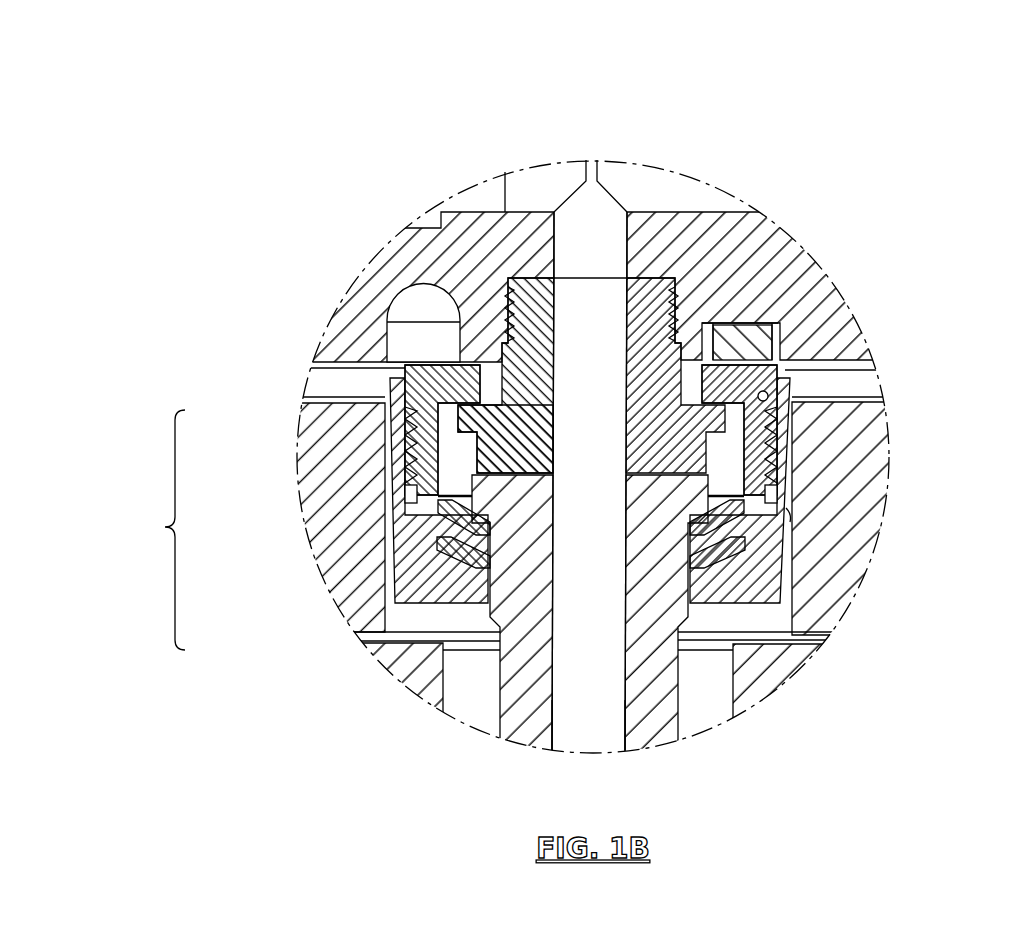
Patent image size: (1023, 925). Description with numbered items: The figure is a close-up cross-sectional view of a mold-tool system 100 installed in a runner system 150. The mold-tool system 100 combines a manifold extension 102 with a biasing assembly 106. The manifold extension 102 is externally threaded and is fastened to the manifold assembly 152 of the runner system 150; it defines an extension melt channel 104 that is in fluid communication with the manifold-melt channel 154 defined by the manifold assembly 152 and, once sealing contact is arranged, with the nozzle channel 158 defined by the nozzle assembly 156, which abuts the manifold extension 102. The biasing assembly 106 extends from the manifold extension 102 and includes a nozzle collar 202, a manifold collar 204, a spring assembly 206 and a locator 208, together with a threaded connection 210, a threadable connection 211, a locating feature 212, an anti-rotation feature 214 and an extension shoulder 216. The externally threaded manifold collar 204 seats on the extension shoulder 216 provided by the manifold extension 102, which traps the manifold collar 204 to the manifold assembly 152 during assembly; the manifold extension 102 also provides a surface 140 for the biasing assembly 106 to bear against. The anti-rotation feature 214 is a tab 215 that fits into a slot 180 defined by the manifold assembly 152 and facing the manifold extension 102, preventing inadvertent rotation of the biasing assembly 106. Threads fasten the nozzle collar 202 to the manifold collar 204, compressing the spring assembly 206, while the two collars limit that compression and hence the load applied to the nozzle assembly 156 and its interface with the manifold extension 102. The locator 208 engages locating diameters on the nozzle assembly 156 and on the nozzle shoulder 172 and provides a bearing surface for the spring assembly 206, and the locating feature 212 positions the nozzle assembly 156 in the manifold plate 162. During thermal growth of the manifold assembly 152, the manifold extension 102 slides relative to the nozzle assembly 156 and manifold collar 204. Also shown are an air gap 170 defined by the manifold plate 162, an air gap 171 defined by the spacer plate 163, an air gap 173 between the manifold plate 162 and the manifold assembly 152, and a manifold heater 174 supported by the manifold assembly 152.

The mold-tool system 100 is at (488, 106).
The manifold extension 102 is at (503, 355).
The extension melt channel 104 is at (590, 300).
The biasing assembly 106 is at (149, 530).
The surface 140 is at (513, 473).
The runner system 150 is at (832, 131).
The manifold assembly 152 is at (750, 245).
The manifold-melt channel 154 is at (610, 218).
The nozzle assembly 156 is at (657, 728).
The nozzle channel 158 is at (590, 717).
The manifold plate 162 is at (315, 468).
The spacer plate 163 is at (770, 672).
The air gap 170 is at (402, 622).
The air gap 171 is at (468, 698).
The nozzle shoulder 172 is at (705, 560).
The air gap 173 is at (330, 357).
The manifold heater 174 is at (407, 303).
The slot 180 is at (780, 332).
The nozzle collar 202 is at (395, 612).
The manifold collar 204 is at (447, 383).
The spring assembly 206 is at (425, 585).
The locator 208 is at (412, 498).
The threaded connection 210 is at (785, 450).
The threadable connection 211 is at (685, 325).
The locating feature 212 is at (770, 395).
The anti-rotation feature 214 is at (897, 186).
The tab 215 is at (740, 340).
The extension shoulder 216 is at (537, 307).